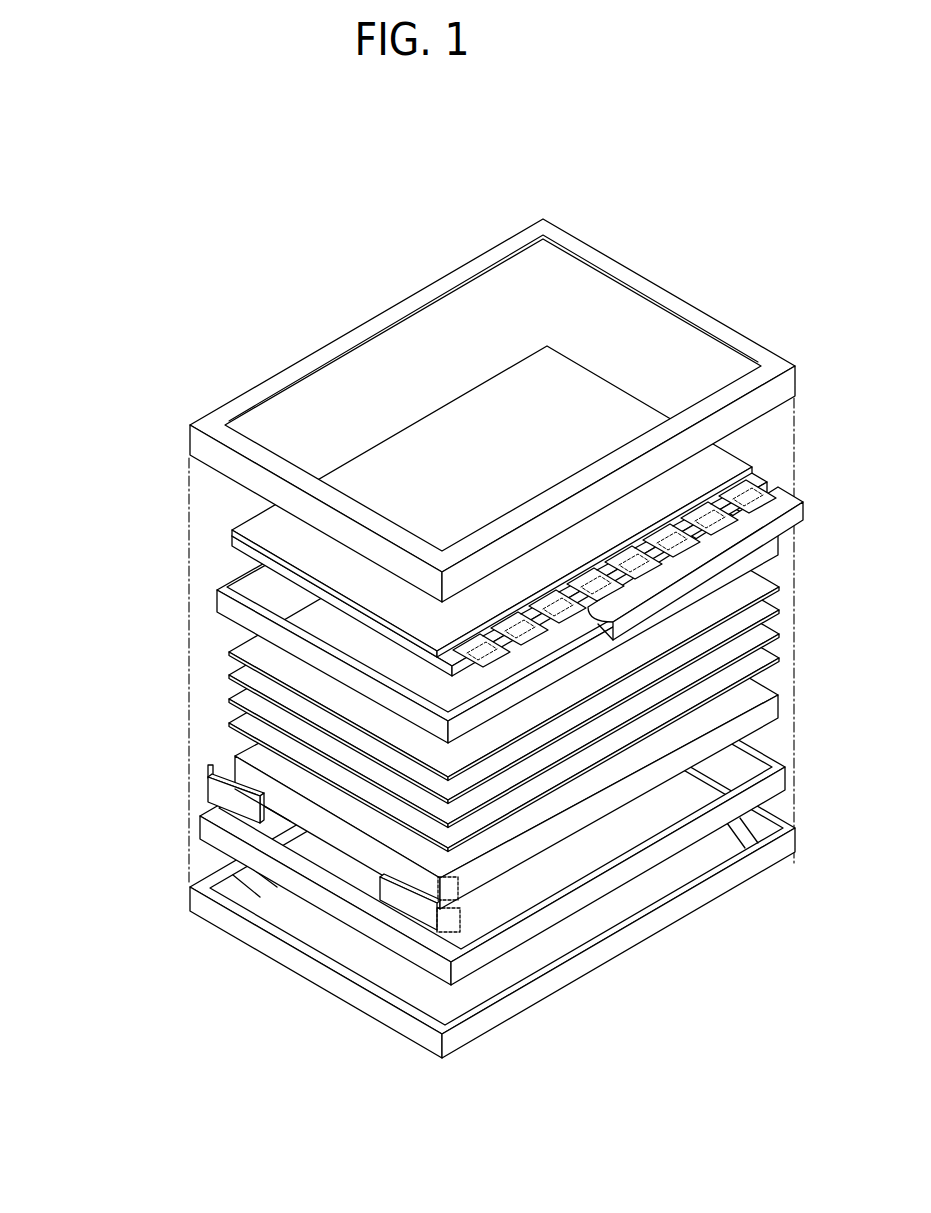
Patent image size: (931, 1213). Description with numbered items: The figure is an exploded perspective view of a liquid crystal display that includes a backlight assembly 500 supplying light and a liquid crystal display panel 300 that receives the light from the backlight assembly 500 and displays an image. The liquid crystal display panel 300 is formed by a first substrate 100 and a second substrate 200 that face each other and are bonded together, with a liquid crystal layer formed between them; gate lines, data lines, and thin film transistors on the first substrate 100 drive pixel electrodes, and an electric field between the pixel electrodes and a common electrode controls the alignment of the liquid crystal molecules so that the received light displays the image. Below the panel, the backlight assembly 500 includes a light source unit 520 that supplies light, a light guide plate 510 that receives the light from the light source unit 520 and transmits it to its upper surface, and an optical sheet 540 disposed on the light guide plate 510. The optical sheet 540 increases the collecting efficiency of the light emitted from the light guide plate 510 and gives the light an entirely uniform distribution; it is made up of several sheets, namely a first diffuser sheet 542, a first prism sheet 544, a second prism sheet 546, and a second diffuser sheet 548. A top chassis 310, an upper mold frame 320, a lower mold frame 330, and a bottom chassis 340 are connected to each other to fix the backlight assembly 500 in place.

The first substrate 100 is at (232, 542).
The second substrate 200 is at (231, 532).
The liquid crystal display panel 300 is at (438, 511).
The top chassis 310 is at (689, 304).
The upper mold frame 320 is at (217, 595).
The lower mold frame 330 is at (200, 826).
The bottom chassis 340 is at (190, 898).
The backlight assembly 500 is at (404, 695).
The light guide plate 510 is at (235, 757).
The light source unit 520 is at (208, 792).
The optical sheet 540 is at (432, 655).
The first diffuser sheet 542 is at (229, 724).
The first prism sheet 544 is at (229, 700).
The second prism sheet 546 is at (229, 676).
The second diffuser sheet 548 is at (229, 653).